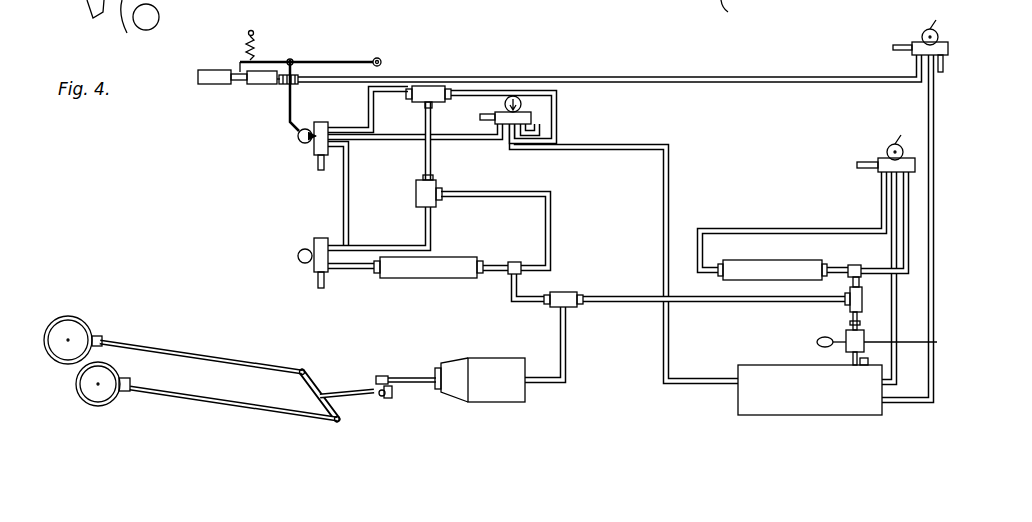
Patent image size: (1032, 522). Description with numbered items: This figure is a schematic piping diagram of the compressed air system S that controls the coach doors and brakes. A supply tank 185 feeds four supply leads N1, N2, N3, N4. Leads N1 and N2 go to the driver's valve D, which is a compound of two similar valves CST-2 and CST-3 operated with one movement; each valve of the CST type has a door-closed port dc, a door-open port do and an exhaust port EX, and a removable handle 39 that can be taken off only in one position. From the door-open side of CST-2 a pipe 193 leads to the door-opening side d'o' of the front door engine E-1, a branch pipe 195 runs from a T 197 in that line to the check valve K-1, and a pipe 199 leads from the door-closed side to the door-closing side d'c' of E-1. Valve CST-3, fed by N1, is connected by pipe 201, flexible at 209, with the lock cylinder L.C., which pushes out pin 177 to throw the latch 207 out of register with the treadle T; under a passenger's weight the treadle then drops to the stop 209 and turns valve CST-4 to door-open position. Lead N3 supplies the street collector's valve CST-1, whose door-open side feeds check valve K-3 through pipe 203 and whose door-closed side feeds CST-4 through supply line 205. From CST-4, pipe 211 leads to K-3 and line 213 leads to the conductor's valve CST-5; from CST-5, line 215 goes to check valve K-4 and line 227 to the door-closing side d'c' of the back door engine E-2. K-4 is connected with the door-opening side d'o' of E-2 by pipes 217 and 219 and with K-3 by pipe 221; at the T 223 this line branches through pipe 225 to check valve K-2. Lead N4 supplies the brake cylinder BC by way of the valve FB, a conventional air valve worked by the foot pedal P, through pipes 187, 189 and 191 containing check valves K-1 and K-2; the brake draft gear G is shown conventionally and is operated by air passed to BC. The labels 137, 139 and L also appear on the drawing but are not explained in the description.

The lever fragment 137 is at (94, 29).
The link fragment 139 is at (421, 25).
The handle 39 is at (926, 29).
The latch 207 is at (238, 70).
The stop 209 is at (296, 60).
The treadle T is at (340, 61).
The pin 177 is at (247, 85).
The lock cylinder L.C. is at (260, 90).
The lever L is at (299, 103).
The door-closed port dc is at (304, 128).
The door-open port do is at (300, 142).
The exhaust port EX is at (323, 171).
The driver's valve D is at (958, 30).
The street collector's valve CST-1 is at (513, 95).
The driver's door valve CST-2 is at (917, 165).
The driver's lock valve CST-3 is at (949, 53).
The treadle valve CST-4 is at (311, 147).
The conductor's valve CST-5 is at (316, 271).
The check valve K-1 is at (862, 300).
The check valve K-2 is at (562, 294).
The check valve K-3 is at (431, 91).
The check valve K-4 is at (434, 190).
The pipe 201 is at (716, 68).
The pipe 203 is at (556, 127).
The supply line 205 is at (398, 141).
The pipe 211 is at (372, 120).
The line 213 is at (349, 225).
The line 215 is at (431, 225).
The pipe 217 is at (553, 204).
The pipe 219 is at (492, 272).
The pipe 221 is at (432, 155).
The T 223 is at (522, 265).
The pipe 225 is at (530, 300).
The line 227 is at (367, 270).
The front door engine E-1 is at (772, 270).
The back door engine E-2 is at (428, 267).
The door-closing side d'c' is at (560, 249).
The door-opening side d'o' is at (652, 253).
The pipe 199 is at (782, 230).
The T 197 is at (858, 267).
The pipe 193 is at (912, 222).
The branch pipe 195 is at (862, 290).
The pipe 189 is at (684, 302).
The pipe 187 is at (851, 321).
The pipe 191 is at (567, 357).
The brake cylinder BC is at (489, 393).
The brake draft gear G is at (222, 377).
The compressed air system S is at (302, 207).
The supply tank 185 is at (810, 390).
The foot pedal P is at (824, 348).
The supply lead N1 is at (935, 310).
The supply lead N2 is at (898, 373).
The supply lead N3 is at (670, 206).
The supply lead N4 is at (863, 366).
The brake valve FB is at (911, 342).